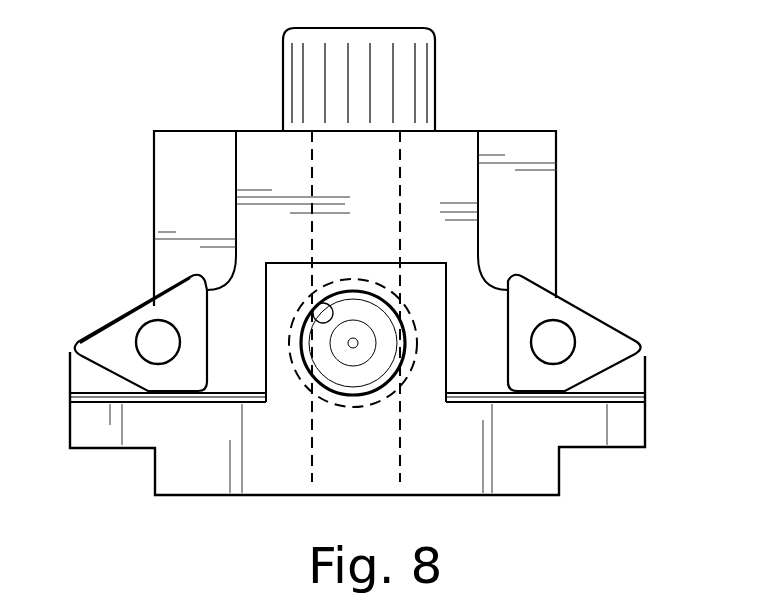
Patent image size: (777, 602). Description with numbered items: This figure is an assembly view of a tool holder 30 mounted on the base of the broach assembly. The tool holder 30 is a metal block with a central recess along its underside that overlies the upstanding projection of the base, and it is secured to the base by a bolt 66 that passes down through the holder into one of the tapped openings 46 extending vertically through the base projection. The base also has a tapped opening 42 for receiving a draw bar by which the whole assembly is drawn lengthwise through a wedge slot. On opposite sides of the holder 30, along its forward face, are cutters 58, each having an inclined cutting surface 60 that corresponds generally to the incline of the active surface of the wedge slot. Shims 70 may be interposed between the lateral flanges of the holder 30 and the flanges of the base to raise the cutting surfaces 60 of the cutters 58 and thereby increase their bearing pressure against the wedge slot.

The tool holder 30 is at (453, 150).
The tapped opening 42 is at (310, 318).
The tapped openings 46 is at (312, 437).
The cutter 58 is at (103, 355).
The cutting surface 60 is at (123, 316).
The bolt 66 is at (436, 61).
The shims 70 is at (70, 397).